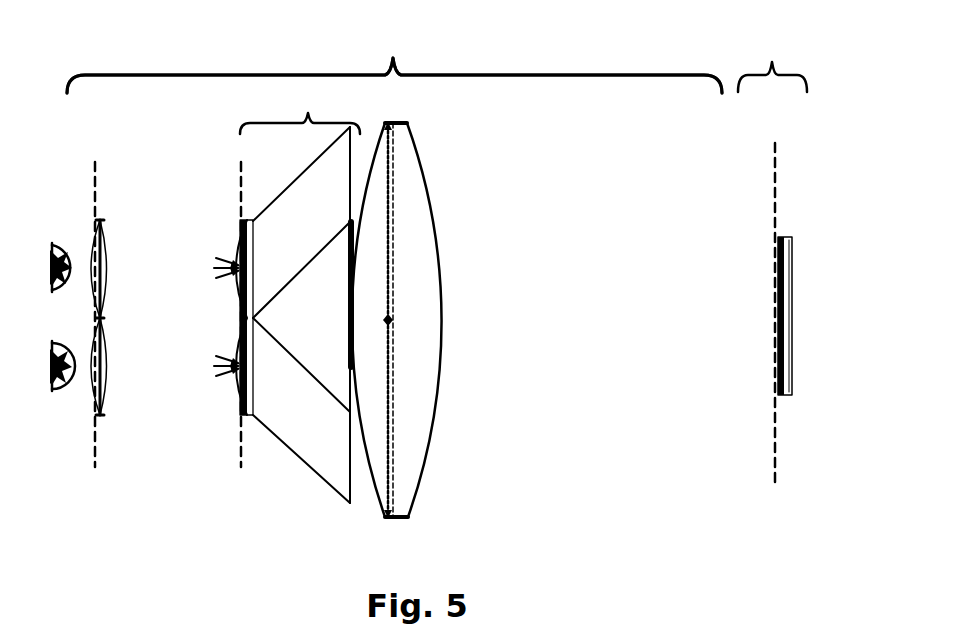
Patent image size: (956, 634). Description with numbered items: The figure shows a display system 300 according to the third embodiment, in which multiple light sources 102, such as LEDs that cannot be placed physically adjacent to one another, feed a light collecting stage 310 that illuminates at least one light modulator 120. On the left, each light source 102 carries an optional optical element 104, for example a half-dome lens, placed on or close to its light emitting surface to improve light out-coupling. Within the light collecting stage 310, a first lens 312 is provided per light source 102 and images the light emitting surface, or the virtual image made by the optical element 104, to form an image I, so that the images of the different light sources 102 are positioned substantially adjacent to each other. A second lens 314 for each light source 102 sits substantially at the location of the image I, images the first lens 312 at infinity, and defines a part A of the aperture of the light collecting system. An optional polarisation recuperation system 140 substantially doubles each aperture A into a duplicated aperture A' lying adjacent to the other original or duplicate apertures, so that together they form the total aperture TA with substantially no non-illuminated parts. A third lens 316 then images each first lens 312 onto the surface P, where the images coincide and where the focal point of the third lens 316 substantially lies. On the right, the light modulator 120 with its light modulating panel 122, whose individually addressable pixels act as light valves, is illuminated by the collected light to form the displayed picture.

The display system 300 is at (96, 65).
The light collecting stage 310 is at (394, 64).
The light modulator 120 is at (772, 64).
The polarisation recuperation system 140 is at (300, 115).
The light source 102 is at (50, 372).
The optical element 104 is at (68, 386).
The first lens 312 is at (102, 365).
The second lens 314 is at (237, 400).
The third lens 316 is at (427, 400).
The light modulating panel 122 is at (775, 383).
The image I is at (102, 195).
The part of the aperture A is at (214, 314).
The duplicated aperture A' is at (332, 476).
The total aperture TA is at (395, 177).
The surface P is at (775, 487).